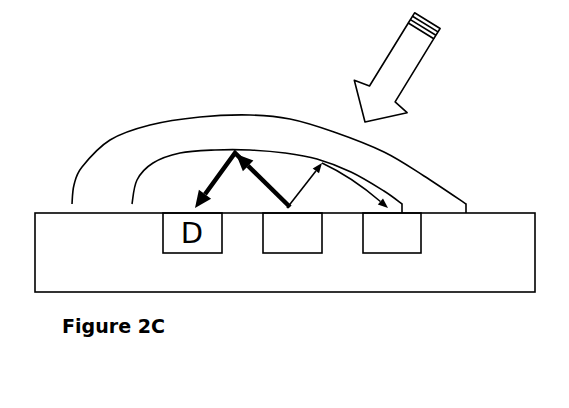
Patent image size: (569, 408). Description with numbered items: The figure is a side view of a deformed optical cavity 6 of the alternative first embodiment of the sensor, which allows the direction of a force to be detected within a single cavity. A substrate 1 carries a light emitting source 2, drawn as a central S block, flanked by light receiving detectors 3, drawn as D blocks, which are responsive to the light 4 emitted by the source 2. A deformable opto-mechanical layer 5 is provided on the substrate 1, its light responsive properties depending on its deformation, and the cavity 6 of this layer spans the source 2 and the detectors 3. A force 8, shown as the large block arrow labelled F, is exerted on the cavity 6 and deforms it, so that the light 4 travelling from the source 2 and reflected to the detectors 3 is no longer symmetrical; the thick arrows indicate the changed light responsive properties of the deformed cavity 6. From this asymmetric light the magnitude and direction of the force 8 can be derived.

The substrate 1 is at (476, 271).
The light emitting source 2 is at (286, 271).
The light receiving detector 3 is at (390, 271).
The light 4 is at (212, 163).
The deformable opto-mechanical layer 5 is at (398, 167).
The optical cavity 6 is at (167, 189).
The force 8 is at (367, 57).